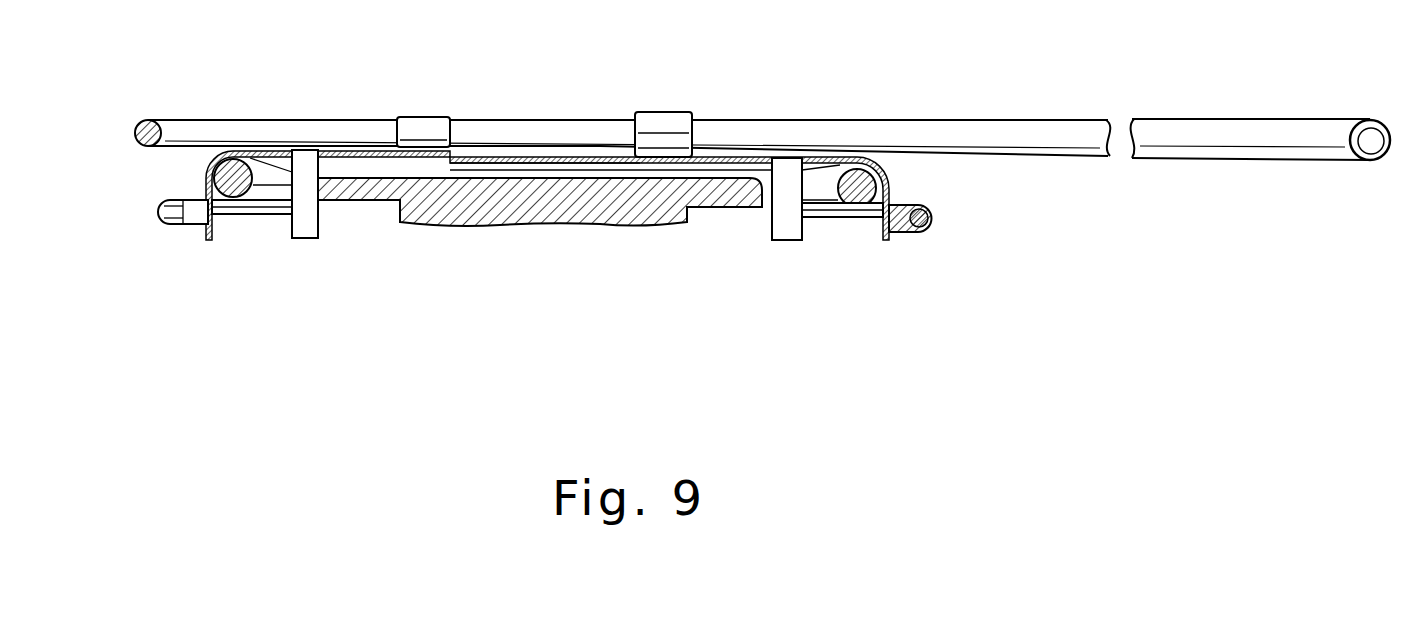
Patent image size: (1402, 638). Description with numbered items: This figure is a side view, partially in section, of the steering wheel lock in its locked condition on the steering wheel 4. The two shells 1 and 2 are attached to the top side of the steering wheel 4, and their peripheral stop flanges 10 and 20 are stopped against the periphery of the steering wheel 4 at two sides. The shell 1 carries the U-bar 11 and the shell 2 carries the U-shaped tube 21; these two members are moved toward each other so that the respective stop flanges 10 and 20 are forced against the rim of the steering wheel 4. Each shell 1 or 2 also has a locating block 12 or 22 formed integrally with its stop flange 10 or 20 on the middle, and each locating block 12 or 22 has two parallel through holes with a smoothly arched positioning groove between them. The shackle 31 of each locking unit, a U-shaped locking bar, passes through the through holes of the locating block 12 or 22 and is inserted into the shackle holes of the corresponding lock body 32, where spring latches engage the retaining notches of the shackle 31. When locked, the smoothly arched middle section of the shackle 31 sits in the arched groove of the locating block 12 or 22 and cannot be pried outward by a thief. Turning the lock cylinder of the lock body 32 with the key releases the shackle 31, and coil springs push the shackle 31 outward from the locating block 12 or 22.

The shell 1 is at (385, 145).
The shell 2 is at (736, 160).
The steering wheel 4 is at (547, 185).
The peripheral stop flange 10 is at (208, 185).
The U-bar 11 is at (347, 120).
The locating block 12 is at (185, 224).
The peripheral stop flange 20 is at (889, 193).
The U-shaped tube 21 is at (950, 120).
The locating block 22 is at (900, 234).
The shackle 31 is at (252, 216).
The lock body 32 is at (305, 238).